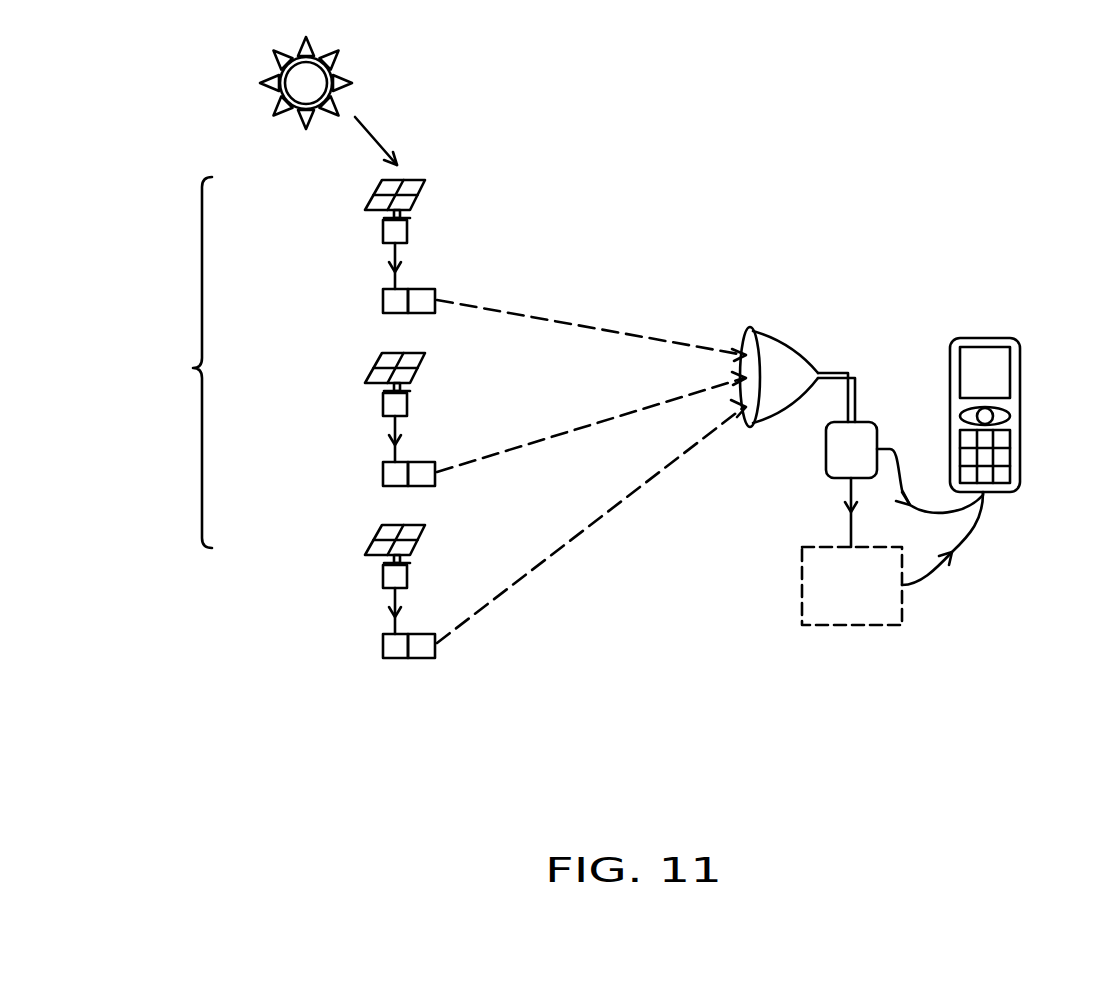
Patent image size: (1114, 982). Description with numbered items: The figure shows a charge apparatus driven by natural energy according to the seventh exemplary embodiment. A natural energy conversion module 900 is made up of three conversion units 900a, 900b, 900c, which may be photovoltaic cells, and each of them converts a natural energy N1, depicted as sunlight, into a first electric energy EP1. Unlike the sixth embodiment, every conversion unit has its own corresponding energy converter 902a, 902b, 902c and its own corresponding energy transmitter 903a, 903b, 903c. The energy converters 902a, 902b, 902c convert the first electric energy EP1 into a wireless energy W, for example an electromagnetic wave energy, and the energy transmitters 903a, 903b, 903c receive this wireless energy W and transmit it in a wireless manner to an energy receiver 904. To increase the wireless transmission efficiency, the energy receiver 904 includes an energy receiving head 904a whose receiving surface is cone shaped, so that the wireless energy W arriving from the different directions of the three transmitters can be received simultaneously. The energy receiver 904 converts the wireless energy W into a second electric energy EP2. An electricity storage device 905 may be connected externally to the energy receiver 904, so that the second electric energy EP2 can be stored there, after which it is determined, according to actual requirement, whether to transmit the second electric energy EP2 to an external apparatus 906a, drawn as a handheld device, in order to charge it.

The natural energy conversion module 900 is at (176, 362).
The conversion unit 900a is at (383, 190).
The conversion unit 900b is at (322, 367).
The conversion unit 900c is at (322, 539).
The energy converter 902a is at (388, 297).
The energy converter 902b is at (346, 476).
The energy converter 902c is at (346, 648).
The energy transmitter 903a is at (422, 307).
The energy transmitter 903b is at (458, 489).
The energy transmitter 903c is at (458, 668).
The energy receiver 904 is at (797, 443).
The energy receiving head 904a is at (785, 364).
The electricity storage device 905 is at (833, 588).
The external apparatus 906a is at (1021, 419).
The natural energy N1 is at (373, 130).
The wireless energy W is at (583, 320).
The first electric energy EP1 is at (418, 438).
The second electric energy EP2 is at (894, 516).